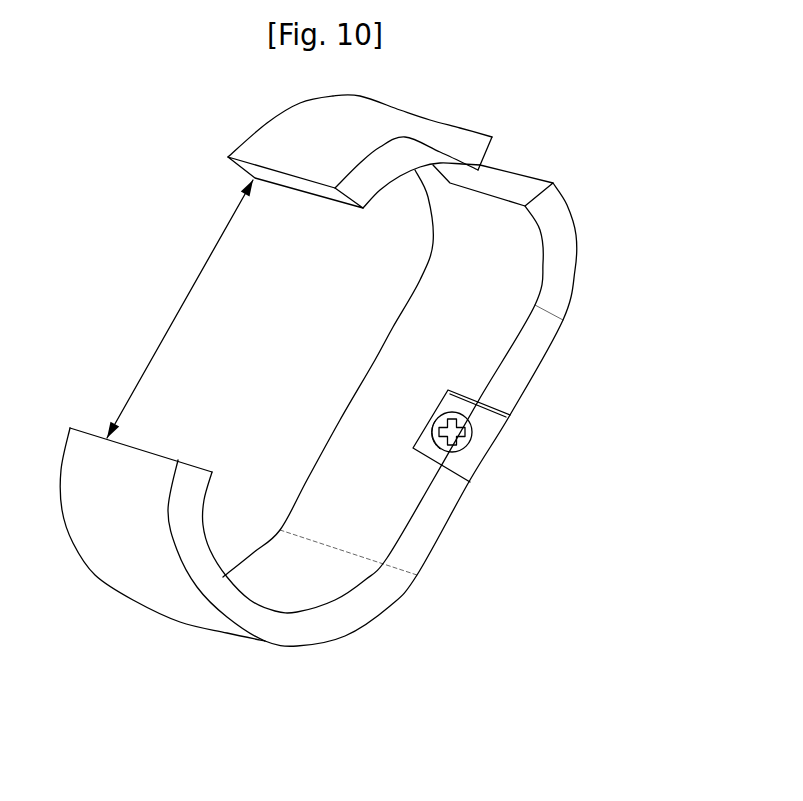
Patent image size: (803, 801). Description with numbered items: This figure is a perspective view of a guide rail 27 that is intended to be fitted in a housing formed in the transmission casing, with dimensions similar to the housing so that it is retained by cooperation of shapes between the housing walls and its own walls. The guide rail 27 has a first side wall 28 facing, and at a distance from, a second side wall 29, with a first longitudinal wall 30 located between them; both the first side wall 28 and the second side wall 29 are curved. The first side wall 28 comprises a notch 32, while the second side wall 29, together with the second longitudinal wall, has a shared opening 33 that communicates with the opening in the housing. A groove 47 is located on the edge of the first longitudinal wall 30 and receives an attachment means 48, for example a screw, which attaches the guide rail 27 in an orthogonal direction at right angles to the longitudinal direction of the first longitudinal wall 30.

The guide rail 27 is at (613, 315).
The first side wall 28 is at (577, 258).
The second side wall 29 is at (97, 577).
The first longitudinal wall 30 is at (537, 375).
The notch 32 is at (525, 172).
The shared opening 33 is at (182, 300).
The groove 47 is at (447, 460).
The attachment means 48 is at (470, 432).